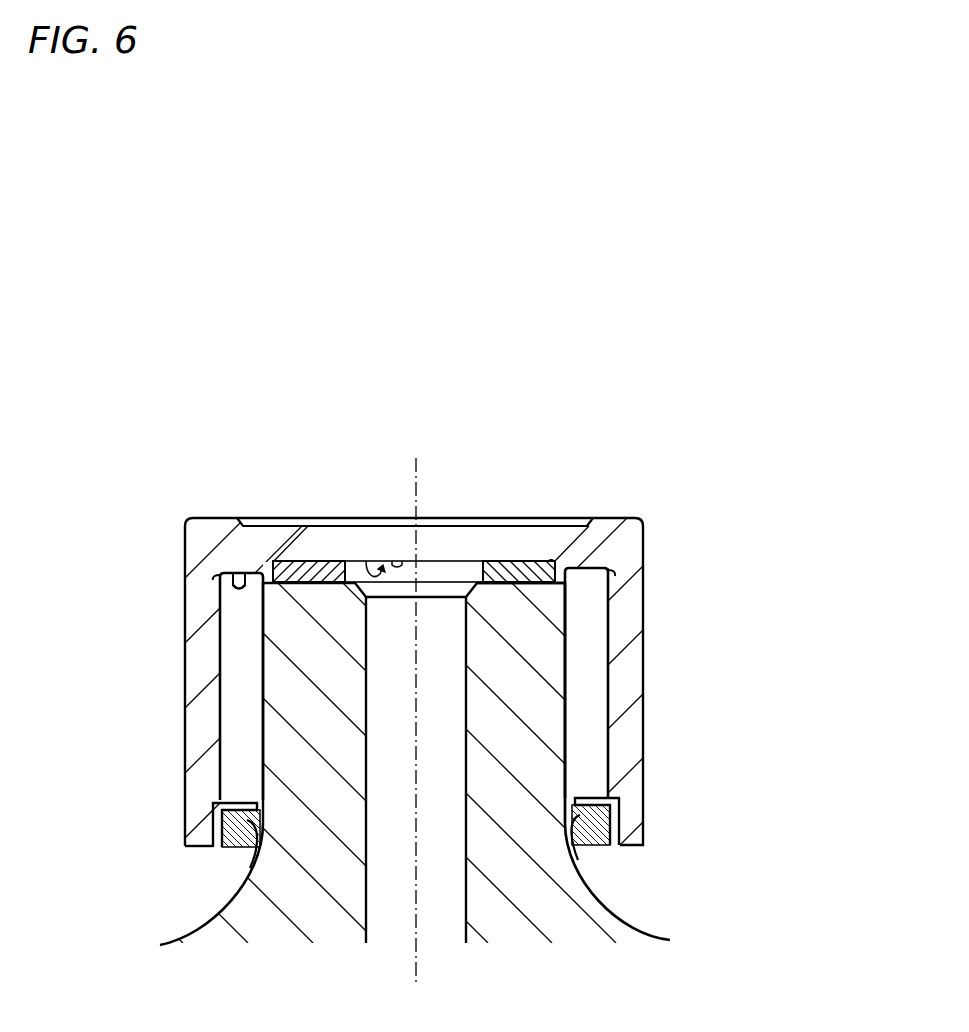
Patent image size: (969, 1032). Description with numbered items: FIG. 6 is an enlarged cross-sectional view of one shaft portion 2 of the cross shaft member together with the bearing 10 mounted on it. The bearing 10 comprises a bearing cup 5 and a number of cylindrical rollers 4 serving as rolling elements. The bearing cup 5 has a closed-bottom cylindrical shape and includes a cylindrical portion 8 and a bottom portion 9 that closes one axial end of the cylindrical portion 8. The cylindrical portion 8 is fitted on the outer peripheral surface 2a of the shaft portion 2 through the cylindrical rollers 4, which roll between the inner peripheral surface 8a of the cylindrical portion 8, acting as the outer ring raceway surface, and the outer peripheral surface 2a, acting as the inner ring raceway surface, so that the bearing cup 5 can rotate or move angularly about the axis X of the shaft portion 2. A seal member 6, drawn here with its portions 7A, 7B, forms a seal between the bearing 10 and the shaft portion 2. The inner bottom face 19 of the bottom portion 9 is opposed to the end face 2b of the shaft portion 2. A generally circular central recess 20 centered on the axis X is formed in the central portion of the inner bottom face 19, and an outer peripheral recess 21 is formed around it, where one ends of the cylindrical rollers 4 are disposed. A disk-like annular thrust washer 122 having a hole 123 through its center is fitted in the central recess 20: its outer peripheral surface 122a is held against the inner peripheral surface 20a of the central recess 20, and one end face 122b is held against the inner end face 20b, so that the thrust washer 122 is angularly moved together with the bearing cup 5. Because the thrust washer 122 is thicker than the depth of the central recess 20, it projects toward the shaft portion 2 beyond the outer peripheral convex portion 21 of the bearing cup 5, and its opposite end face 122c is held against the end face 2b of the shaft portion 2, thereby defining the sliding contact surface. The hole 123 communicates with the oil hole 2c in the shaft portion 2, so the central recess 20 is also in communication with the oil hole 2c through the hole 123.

The shaft portion 2 is at (456, 718).
The outer peripheral surface 2a is at (563, 726).
The end face 2b is at (513, 562).
The oil hole 2c is at (467, 897).
The cylindrical rollers 4 is at (237, 663).
The bearing cup 5 is at (634, 570).
The seal member 6 is at (482, 843).
The seal outer member 7A is at (615, 830).
The seal lip 7B is at (593, 849).
The cylindrical portion 8 is at (471, 668).
The inner peripheral surface 8a is at (602, 634).
The bottom portion 9 is at (453, 540).
The bearing 10 is at (471, 627).
The inner bottom face 19 is at (398, 483).
The central recess 20 is at (454, 503).
The inner peripheral surface 20a is at (552, 562).
The inner end face 20b is at (395, 561).
The outer peripheral recess 21 is at (217, 509).
The thrust washer 122 is at (493, 542).
The outer peripheral surface 122a is at (645, 518).
The end face 122b is at (533, 561).
The end face 122c is at (495, 583).
The hole 123 is at (478, 560).
The axis X is at (415, 915).